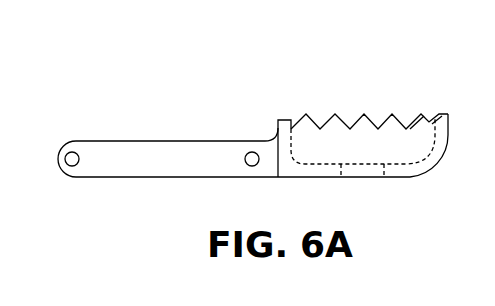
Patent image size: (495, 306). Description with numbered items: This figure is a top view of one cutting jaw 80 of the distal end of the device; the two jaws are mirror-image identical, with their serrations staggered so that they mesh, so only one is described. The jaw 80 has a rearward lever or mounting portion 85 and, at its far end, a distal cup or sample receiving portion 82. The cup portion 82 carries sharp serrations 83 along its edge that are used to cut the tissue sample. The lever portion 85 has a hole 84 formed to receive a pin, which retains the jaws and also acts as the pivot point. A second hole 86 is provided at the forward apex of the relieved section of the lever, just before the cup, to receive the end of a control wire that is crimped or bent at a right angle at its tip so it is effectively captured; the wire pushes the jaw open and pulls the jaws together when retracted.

The jaw 80 is at (443, 88).
The distal cup or sample receiving portion 82 is at (438, 163).
The sharp serrations 83 is at (365, 114).
The hole 84 is at (72, 152).
The rearward lever or mounting portion 85 is at (158, 141).
The hole 86 is at (252, 152).